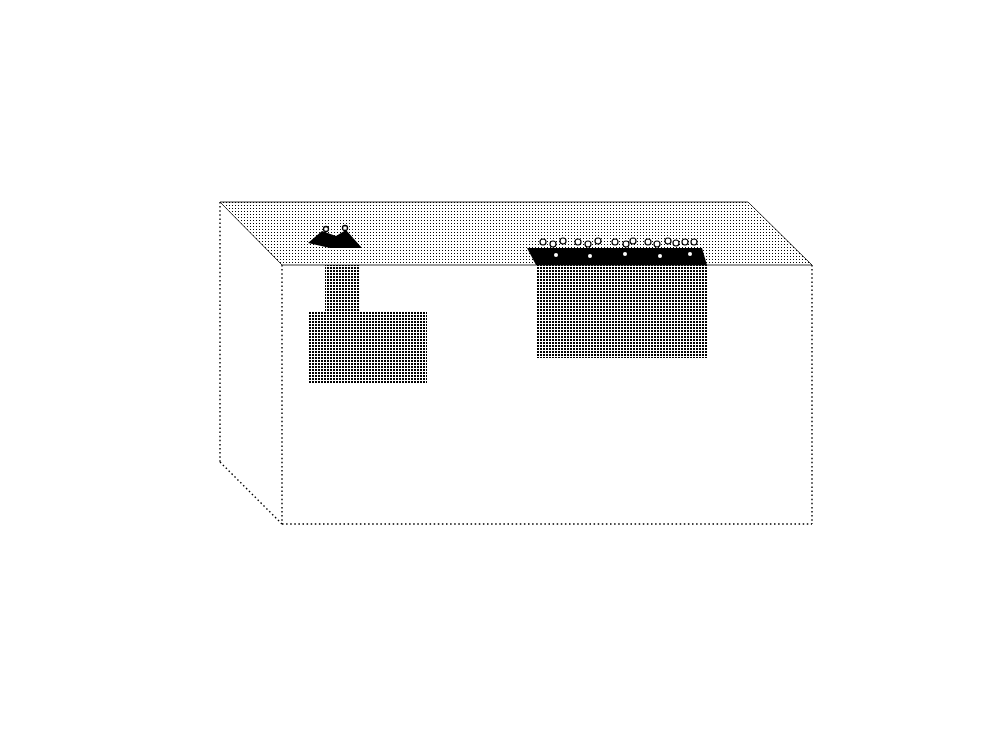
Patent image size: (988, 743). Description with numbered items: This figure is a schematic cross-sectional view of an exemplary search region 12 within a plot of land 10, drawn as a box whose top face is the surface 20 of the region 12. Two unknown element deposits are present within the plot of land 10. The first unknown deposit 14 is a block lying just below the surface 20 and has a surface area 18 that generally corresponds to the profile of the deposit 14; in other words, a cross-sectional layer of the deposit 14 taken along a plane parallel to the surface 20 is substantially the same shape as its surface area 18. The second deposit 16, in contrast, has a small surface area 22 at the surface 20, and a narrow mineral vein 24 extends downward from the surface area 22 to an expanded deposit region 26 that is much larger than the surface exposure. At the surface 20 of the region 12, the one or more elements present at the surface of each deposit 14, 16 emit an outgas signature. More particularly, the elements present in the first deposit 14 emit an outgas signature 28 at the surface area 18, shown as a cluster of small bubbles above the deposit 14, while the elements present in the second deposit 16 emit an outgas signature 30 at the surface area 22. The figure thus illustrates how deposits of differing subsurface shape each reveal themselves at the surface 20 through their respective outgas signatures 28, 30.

The plot of land 10 is at (238, 372).
The search region 12 is at (410, 145).
The first unknown deposit 14 is at (653, 373).
The second deposit 16 is at (336, 417).
The surface area 18 is at (703, 250).
The surface 20 is at (597, 213).
The surface area 22 is at (330, 241).
The mineral vein 24 is at (325, 292).
The expanded deposit region 26 is at (326, 343).
The outgas signature 28 is at (533, 245).
The outgas signature 30 is at (317, 222).